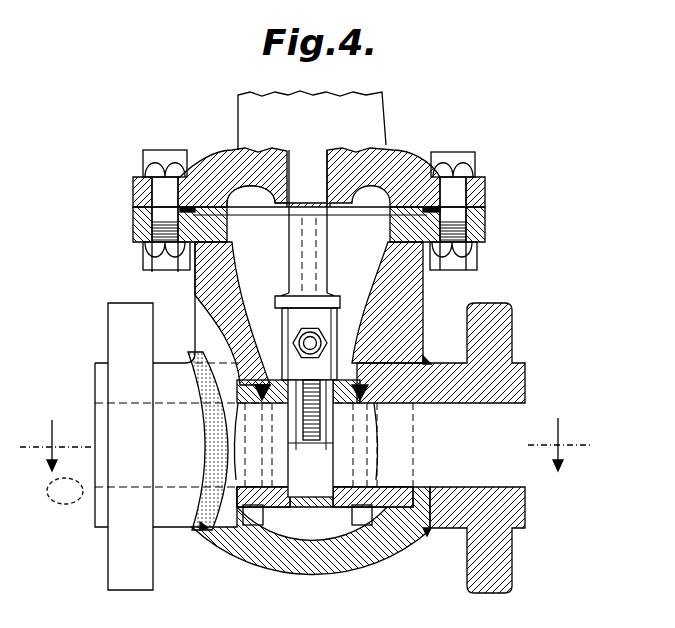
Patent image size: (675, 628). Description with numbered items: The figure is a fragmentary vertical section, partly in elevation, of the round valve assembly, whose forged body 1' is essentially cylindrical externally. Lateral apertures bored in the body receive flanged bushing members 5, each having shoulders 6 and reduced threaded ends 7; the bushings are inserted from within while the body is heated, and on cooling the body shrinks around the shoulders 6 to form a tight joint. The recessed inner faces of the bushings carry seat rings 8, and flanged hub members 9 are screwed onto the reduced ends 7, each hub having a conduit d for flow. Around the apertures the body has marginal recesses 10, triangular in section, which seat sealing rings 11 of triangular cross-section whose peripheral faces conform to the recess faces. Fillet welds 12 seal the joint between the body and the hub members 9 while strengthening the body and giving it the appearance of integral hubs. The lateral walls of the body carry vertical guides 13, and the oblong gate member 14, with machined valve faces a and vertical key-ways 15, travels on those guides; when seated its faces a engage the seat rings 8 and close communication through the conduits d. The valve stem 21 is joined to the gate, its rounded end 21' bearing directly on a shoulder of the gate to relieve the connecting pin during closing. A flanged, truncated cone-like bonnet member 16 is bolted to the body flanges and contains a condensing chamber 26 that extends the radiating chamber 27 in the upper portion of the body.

The forged body 1' is at (336, 296).
The condensing chamber 26 is at (283, 150).
The bonnet member 16 is at (388, 138).
The radiating chamber 27 is at (257, 226).
The valve stem 21 is at (308, 221).
The vertical guides 13 is at (290, 270).
The vertical key-ways 15 is at (337, 367).
The hub members 9 is at (128, 525).
The seat rings 8 is at (302, 577).
The sealing rings 11 is at (237, 337).
The marginal recesses 10 is at (240, 553).
The flanged bushing members 5 is at (270, 570).
The gate member 14 is at (310, 438).
The rounded end of valve stem 21' is at (200, 441).
The shoulders 6 is at (367, 427).
The fillet welds 12 is at (425, 362).
The reduced threaded ends 7 is at (472, 437).
The valve faces a is at (287, 483).
The conduits d is at (488, 480).